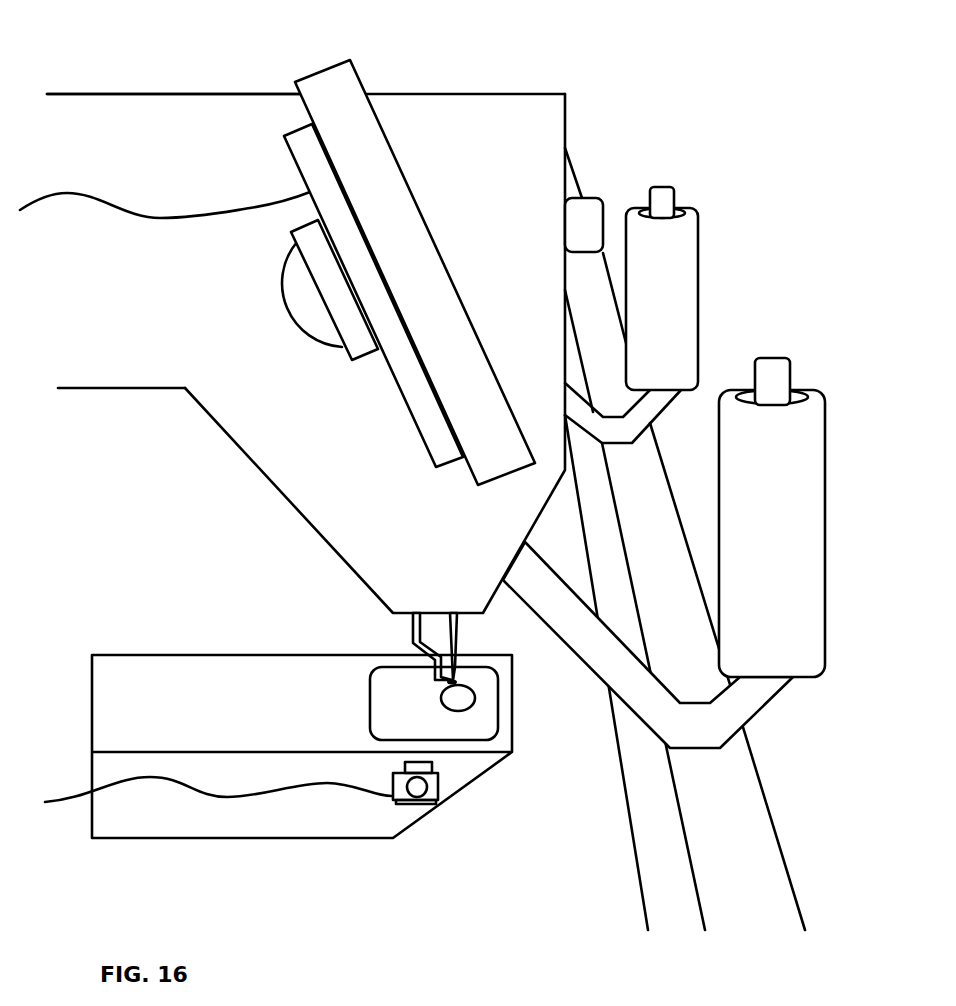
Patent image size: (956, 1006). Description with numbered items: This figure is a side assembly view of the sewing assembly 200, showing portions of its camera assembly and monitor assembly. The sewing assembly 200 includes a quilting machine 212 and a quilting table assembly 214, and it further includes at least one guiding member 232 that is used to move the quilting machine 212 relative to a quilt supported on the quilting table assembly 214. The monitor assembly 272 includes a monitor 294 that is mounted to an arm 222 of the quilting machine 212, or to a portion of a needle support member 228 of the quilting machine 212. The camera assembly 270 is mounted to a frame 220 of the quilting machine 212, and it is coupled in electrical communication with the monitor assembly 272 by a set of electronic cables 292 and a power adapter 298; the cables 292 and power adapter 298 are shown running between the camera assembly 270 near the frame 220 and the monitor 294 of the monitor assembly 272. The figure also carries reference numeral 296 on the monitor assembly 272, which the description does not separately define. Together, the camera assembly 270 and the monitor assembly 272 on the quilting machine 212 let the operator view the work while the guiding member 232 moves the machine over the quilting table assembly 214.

The sewing assembly 200 is at (738, 134).
The quilting machine 212 is at (64, 90).
The quilting table assembly 214 is at (642, 898).
The frame 220 is at (162, 673).
The arm 222 is at (98, 382).
The needle support member 228 is at (321, 514).
The guiding member 232 is at (805, 456).
The camera assembly 270 is at (442, 770).
The monitor assembly 272 is at (374, 94).
The electronic cables 292 is at (163, 781).
The monitor 294 is at (320, 88).
The rail 296 is at (193, 112).
The power adapter 298 is at (97, 200).